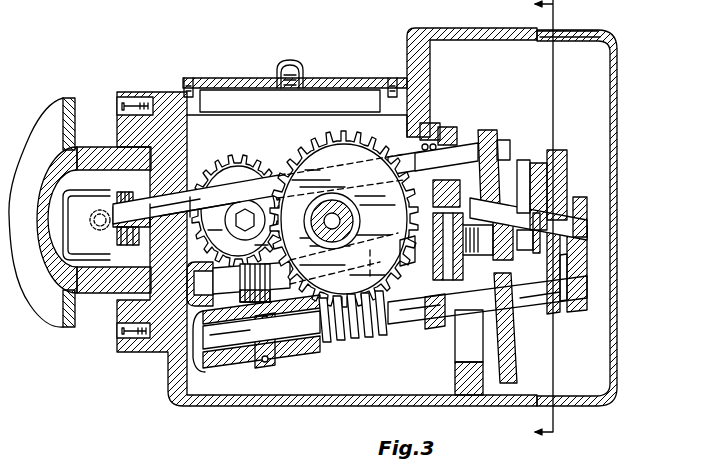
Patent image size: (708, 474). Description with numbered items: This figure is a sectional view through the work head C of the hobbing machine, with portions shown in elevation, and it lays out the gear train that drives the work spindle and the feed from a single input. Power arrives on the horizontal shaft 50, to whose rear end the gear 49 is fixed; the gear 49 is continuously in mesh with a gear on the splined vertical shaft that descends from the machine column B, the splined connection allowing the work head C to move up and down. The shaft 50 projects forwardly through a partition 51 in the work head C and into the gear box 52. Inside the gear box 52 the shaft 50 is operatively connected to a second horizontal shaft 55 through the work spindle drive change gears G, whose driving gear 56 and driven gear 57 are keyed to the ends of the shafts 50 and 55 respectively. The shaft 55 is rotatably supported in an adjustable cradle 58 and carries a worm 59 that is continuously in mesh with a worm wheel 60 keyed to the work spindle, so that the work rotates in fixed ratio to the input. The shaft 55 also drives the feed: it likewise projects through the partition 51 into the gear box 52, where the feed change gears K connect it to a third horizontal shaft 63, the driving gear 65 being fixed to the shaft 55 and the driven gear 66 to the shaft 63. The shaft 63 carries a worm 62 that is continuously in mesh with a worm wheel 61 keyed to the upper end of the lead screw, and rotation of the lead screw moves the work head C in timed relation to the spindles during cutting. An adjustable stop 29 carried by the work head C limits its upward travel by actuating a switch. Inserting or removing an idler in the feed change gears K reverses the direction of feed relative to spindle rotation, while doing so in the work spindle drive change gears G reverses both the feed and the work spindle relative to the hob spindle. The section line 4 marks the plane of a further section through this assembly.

The gear box 52 is at (468, 48).
The work head C is at (512, 27).
The column B is at (67, 330).
The gear 49 is at (120, 239).
The horizontal shaft 50 is at (190, 193).
The worm wheel 61 is at (246, 166).
The worm wheel 60 is at (317, 138).
The adjustable stop 29 is at (338, 210).
The horizontal shaft 63 is at (400, 244).
The worm 62 is at (281, 283).
The adjustable cradle 58 is at (242, 377).
The worm 59 is at (327, 345).
The horizontal shaft 55 is at (420, 342).
The driven gear 57 is at (511, 352).
The driving gear 65 is at (560, 310).
The partition 51 is at (433, 124).
The driving gear 56 is at (488, 133).
The work spindle drive change gears G is at (480, 187).
The driven gear 66 is at (555, 152).
The feed change gears K is at (567, 187).
The section line 4- 4 is at (531, 224).